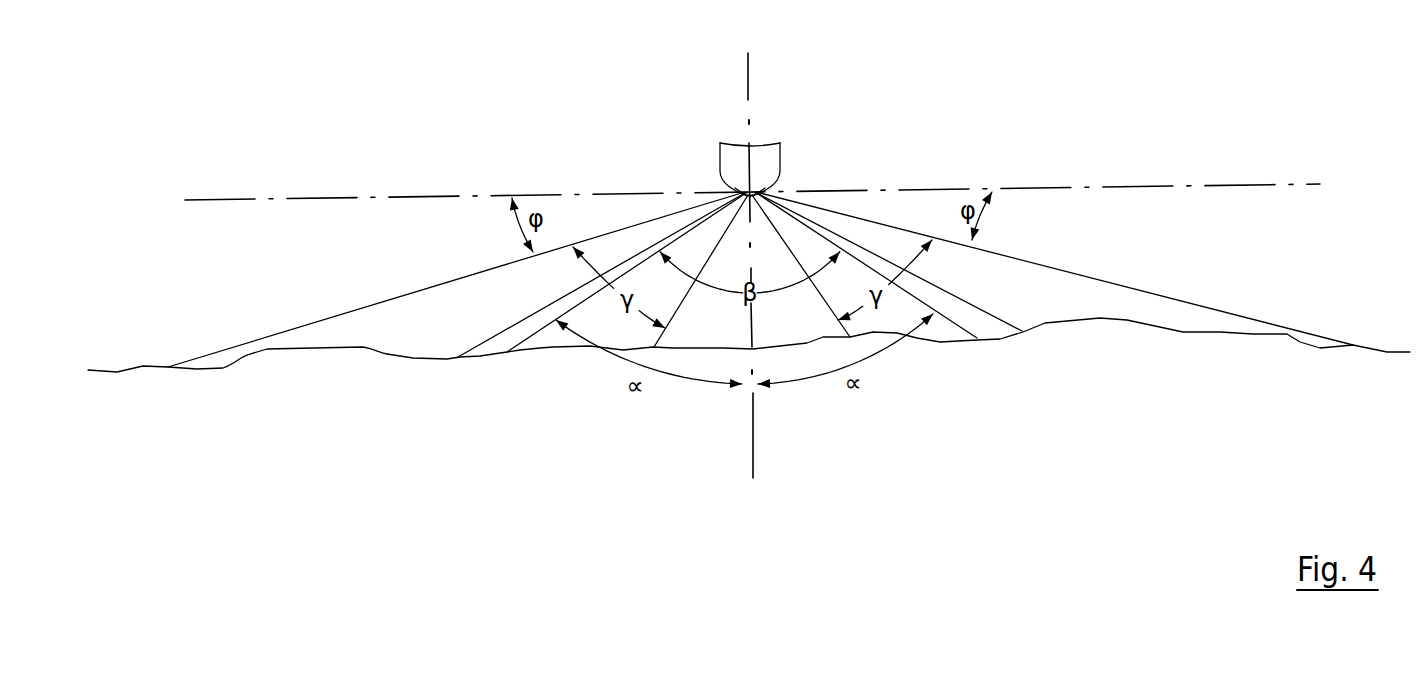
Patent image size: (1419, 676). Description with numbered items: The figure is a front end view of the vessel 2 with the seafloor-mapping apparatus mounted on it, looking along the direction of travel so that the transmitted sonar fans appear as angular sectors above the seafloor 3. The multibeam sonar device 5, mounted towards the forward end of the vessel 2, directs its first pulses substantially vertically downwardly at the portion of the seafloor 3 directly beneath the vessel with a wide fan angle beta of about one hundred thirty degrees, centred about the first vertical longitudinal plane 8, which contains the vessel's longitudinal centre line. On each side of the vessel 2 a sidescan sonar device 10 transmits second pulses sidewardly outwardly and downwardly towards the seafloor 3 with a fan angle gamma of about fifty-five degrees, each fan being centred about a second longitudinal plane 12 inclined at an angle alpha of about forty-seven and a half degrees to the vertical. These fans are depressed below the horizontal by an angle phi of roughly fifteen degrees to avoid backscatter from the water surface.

The first vertical longitudinal plane 8 is at (748, 78).
The vessel 2 is at (775, 163).
The sidescan sonar devices 10 is at (742, 194).
The multibeam sonar device 5 is at (755, 205).
The seafloor 3 is at (1043, 325).
The second longitudinal planes 12 is at (540, 337).